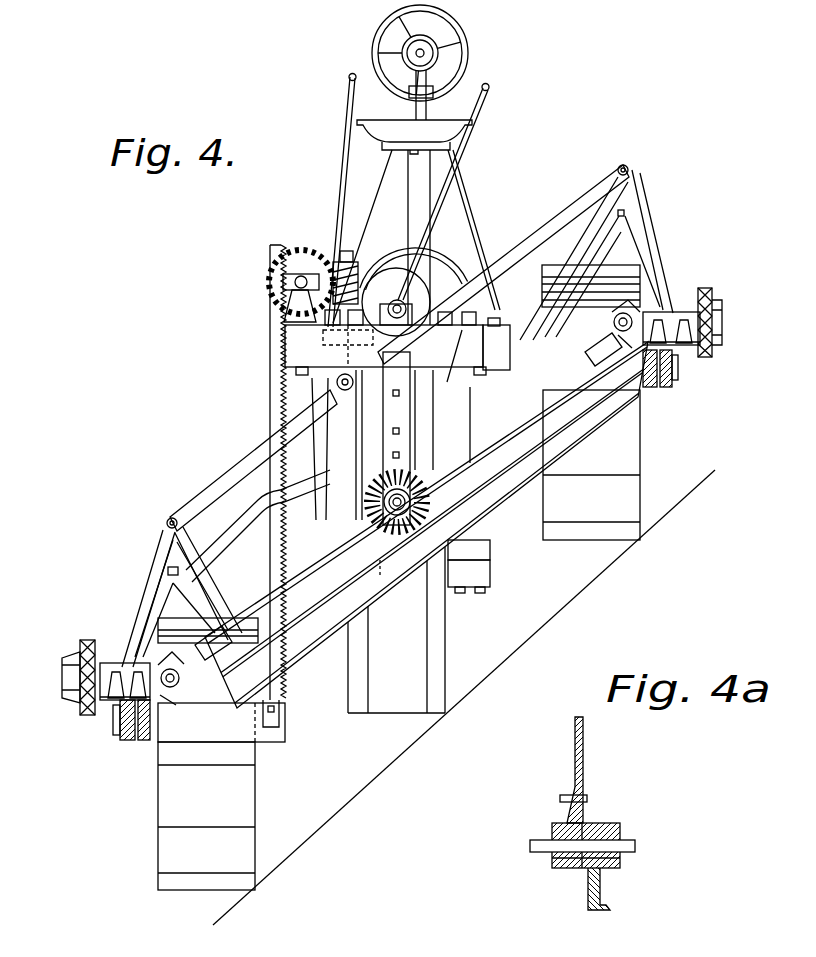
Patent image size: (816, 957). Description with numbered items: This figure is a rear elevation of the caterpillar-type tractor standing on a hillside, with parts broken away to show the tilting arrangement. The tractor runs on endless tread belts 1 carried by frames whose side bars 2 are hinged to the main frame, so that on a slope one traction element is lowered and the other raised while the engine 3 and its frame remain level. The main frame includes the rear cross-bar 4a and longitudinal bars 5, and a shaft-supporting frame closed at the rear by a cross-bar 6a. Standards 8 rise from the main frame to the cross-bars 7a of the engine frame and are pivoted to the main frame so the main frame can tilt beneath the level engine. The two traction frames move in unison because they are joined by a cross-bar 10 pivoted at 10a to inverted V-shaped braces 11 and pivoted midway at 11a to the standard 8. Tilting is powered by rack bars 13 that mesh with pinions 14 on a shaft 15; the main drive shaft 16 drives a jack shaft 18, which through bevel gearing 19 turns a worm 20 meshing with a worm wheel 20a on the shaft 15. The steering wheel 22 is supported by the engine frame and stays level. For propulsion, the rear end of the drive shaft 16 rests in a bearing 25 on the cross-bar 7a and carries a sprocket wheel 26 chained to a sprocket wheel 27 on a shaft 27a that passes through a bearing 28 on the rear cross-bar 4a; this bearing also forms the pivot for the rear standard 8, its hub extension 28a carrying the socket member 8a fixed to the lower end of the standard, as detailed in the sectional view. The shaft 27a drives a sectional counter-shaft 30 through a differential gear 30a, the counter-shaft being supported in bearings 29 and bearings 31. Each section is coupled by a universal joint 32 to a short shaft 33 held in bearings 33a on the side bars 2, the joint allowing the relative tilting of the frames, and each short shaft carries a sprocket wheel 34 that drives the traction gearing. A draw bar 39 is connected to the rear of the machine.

In FIG. 4, the endless tread belts 1 is at (252, 800).
In FIG. 4, the side bars 2 is at (138, 742).
In FIG. 4, the engine 3 is at (426, 310).
In FIG. 4, the longitudinal bars 5 is at (490, 548).
In FIG. 4, the cross-bar 6a is at (310, 640).
In FIG. 4, the cross-bars 7a is at (494, 318).
In FIG. 4, the standards 8 is at (405, 392).
In FIG. 4A, the standards 8 is at (584, 772).
In FIG. 4A, the socket member 8a is at (555, 832).
In FIG. 4, the cross-bars 10 is at (553, 260).
In FIG. 4, the pivotal connection 10a is at (624, 165).
In FIG. 4, the inverted V-shaped braces 11 is at (633, 238).
In FIG. 4, the pivotal connection 11a is at (483, 336).
In FIG. 4, the rack bars 13 is at (285, 352).
In FIG. 4, the pinions 14 is at (302, 262).
In FIG. 4, the power-driven shaft 15 is at (285, 305).
In FIG. 4, the main drive shaft 16 is at (398, 296).
In FIG. 4, the jack shaft 18 is at (325, 400).
In FIG. 4, the bevel gearing 19 is at (337, 382).
In FIG. 4, the worm 20 is at (350, 268).
In FIG. 4, the worm wheel 20a is at (270, 262).
In FIG. 4, the steering wheel 22 is at (446, 660).
In FIG. 4, the bearing 25 is at (450, 262).
In FIG. 4, the sprocket wheel 26 is at (455, 285).
In FIG. 4, the sprocket wheel 27 is at (425, 517).
In FIG. 4A, the shaft 27a is at (560, 856).
In FIG. 4A, the bearing 28 is at (595, 832).
In FIG. 4A, the hub extension 28a is at (552, 833).
In FIG. 4, the bearings 29 is at (203, 632).
In FIG. 4, the counter-shaft 30 is at (294, 578).
In FIG. 4, the differential gear 30a is at (383, 575).
In FIG. 4, the bearings 31 is at (355, 580).
In FIG. 4, the universal joint 32 is at (175, 692).
In FIG. 4, the short shaft 33 is at (125, 700).
In FIG. 4, the bearings 33a is at (90, 705).
In FIG. 4, the sprocket wheel 34 is at (88, 640).
In FIG. 4, the draw bar 39 is at (492, 560).
In FIG. 4A, the rear cross-bar 4a is at (602, 893).